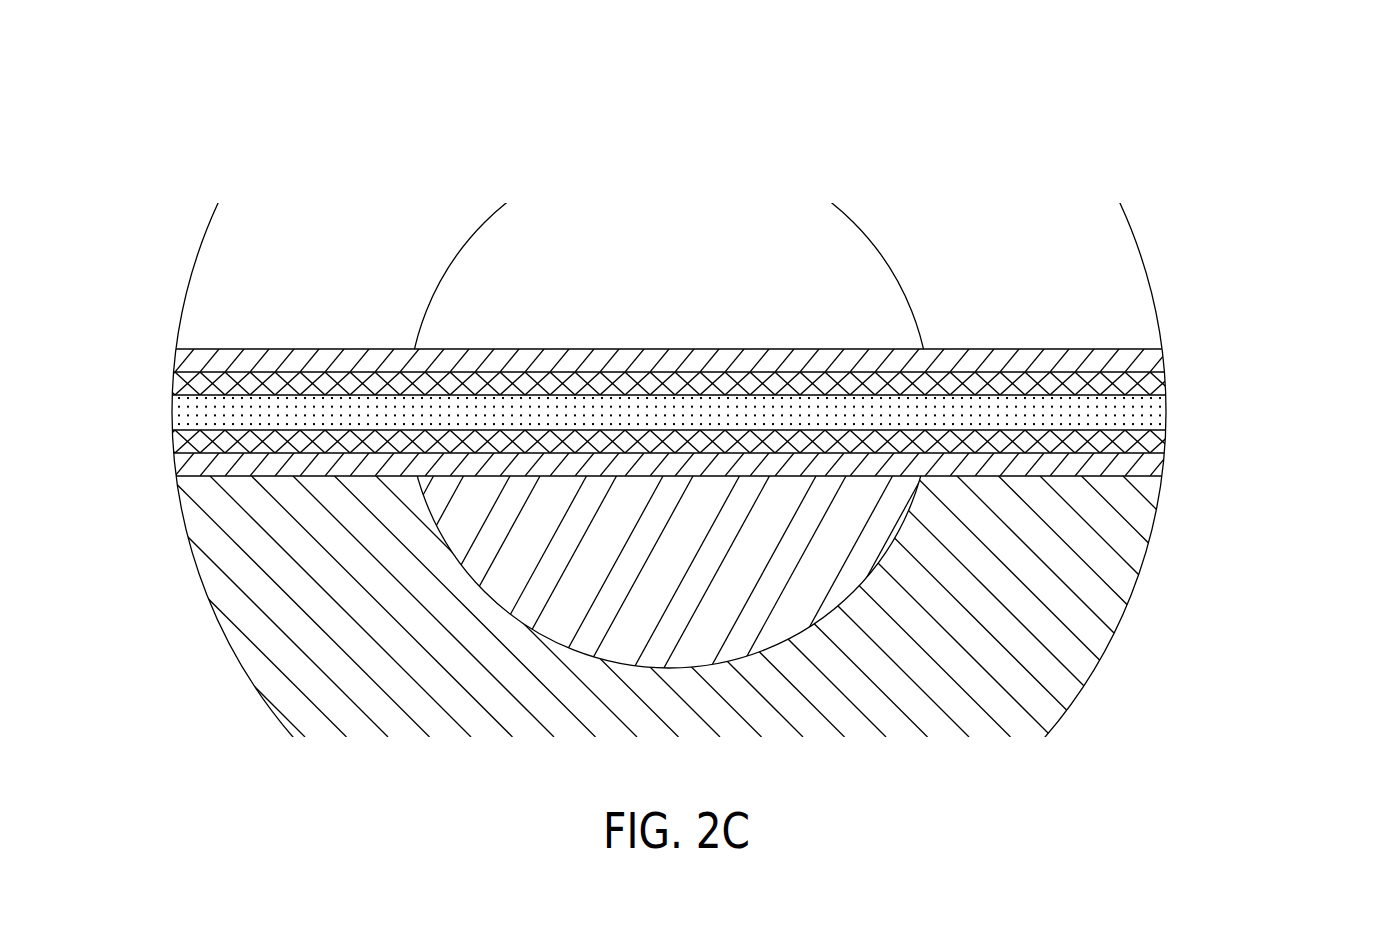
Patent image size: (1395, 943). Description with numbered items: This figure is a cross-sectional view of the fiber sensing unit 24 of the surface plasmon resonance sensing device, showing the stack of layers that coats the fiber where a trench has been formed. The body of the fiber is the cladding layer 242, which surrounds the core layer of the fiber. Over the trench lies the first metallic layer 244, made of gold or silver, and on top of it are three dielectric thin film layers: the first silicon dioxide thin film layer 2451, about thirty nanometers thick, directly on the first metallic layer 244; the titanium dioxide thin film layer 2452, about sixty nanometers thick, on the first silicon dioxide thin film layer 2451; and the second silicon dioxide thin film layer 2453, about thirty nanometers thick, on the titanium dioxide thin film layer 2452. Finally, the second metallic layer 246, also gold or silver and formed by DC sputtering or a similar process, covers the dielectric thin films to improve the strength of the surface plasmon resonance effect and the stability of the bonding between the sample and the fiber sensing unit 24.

The fiber sensing unit 24 is at (1036, 172).
The cladding layer 242 is at (255, 253).
The first metallic layer 244 is at (1157, 462).
The second metallic layer 246 is at (1157, 360).
The first silicon dioxide thin film layer 2451 is at (1157, 437).
The titanium dioxide thin film layer 2452 is at (1157, 412).
The second silicon dioxide thin film layer 2453 is at (1157, 383).